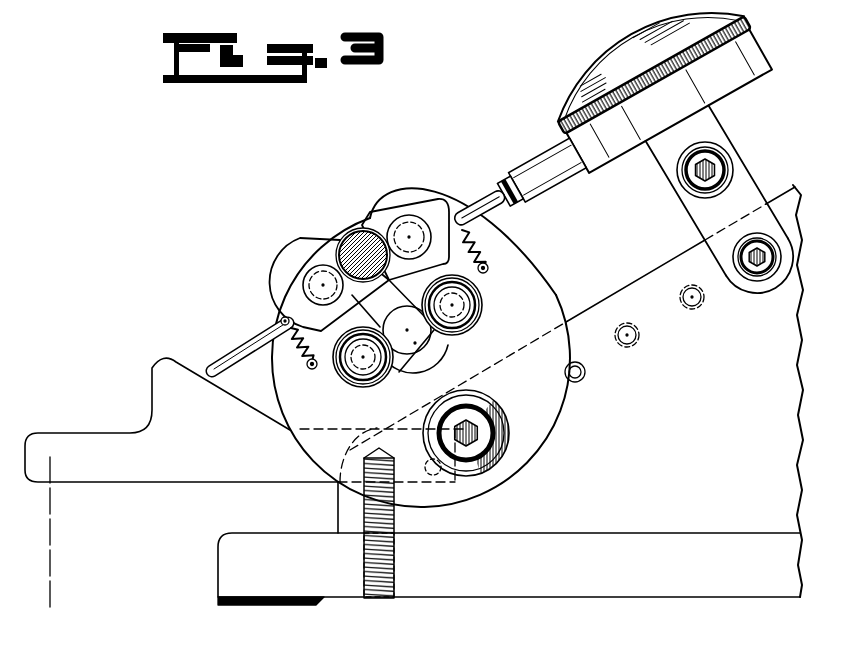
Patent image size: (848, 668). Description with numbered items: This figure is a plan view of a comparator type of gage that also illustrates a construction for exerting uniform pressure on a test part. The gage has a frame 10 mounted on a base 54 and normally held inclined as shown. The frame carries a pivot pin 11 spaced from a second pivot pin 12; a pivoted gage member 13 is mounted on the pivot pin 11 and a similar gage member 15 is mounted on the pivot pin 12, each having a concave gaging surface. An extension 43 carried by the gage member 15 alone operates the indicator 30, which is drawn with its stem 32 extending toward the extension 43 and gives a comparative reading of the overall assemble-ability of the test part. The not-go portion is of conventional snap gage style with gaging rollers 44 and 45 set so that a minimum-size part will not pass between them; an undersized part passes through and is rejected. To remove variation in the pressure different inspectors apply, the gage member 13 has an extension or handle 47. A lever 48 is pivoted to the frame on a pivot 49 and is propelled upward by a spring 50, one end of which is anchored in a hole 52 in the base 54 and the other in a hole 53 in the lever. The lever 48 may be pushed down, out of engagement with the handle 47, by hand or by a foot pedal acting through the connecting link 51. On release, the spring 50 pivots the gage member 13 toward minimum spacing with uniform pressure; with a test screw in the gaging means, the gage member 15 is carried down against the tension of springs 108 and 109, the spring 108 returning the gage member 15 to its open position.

The frame 10 is at (271, 289).
The pivot pin 11 is at (307, 277).
The second pivot pin 12 is at (412, 219).
The pivoted gage member 13 is at (313, 256).
The gage member 15 is at (386, 213).
The indicator 30 is at (612, 70).
The dial indicator stem 32 is at (500, 183).
The extension 43 is at (475, 208).
The gaging roller 44 is at (347, 384).
The gaging roller 45 is at (481, 318).
The extension or handle 47 is at (241, 344).
The lever 48 is at (152, 381).
The pivot 49 is at (432, 476).
The spring 50 is at (364, 519).
The connecting link 51 is at (52, 523).
The hole 52 is at (361, 555).
The hole 53 is at (338, 484).
The base 54 is at (574, 597).
The spring 108 is at (472, 242).
The spring 109 is at (293, 356).